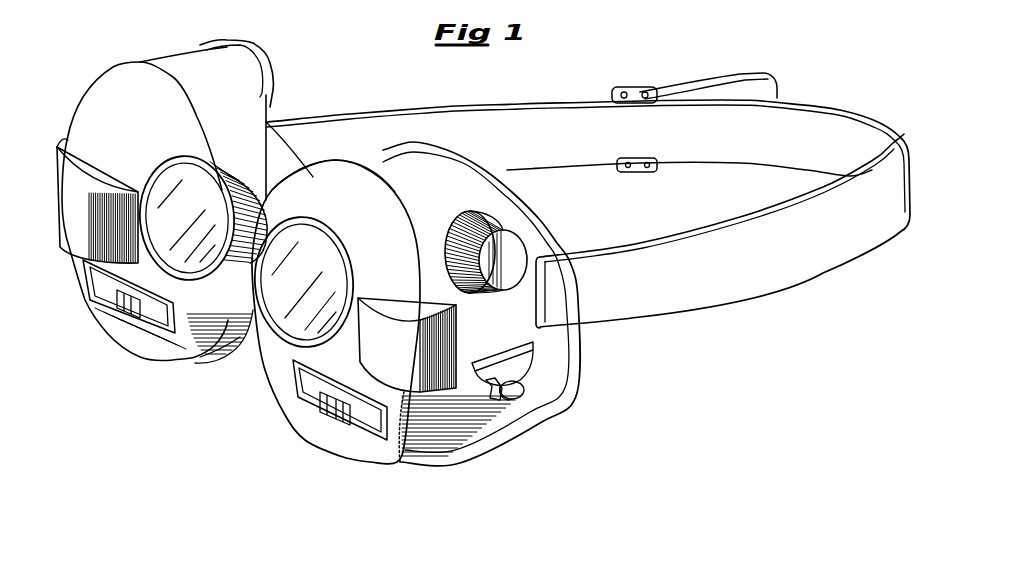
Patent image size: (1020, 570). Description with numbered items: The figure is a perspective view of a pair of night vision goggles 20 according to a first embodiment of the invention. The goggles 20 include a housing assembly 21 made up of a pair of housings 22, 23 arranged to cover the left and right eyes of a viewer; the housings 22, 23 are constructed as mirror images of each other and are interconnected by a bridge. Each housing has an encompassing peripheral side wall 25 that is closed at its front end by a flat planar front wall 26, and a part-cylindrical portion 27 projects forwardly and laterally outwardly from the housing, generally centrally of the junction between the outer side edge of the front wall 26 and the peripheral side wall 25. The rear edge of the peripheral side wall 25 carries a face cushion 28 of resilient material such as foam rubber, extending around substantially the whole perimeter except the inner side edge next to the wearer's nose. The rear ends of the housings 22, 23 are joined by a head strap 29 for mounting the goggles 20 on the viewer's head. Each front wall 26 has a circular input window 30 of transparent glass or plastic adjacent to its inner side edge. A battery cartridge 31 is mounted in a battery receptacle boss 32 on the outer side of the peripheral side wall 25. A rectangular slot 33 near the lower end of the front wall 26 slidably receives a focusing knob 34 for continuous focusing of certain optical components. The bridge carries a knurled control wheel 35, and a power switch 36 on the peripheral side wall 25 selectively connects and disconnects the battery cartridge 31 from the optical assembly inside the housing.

The night vision goggles 20 is at (361, 56).
The housing assembly 21 is at (250, 413).
The housing 22 is at (435, 460).
The housing 23 is at (85, 93).
The peripheral side wall 25 is at (376, 157).
The front wall 26 is at (315, 175).
The part-cylindrical portion 27 is at (407, 392).
The face cushion 28 is at (567, 242).
The head strap 29 is at (733, 293).
The circular input window 30 is at (200, 280).
The battery cartridge 31 is at (518, 247).
The battery receptacle boss 32 is at (480, 210).
The rectangular slot 33 is at (350, 413).
The focusing knob 34 is at (323, 407).
The knurled control wheel 35 is at (263, 198).
The power switch 36 is at (523, 397).